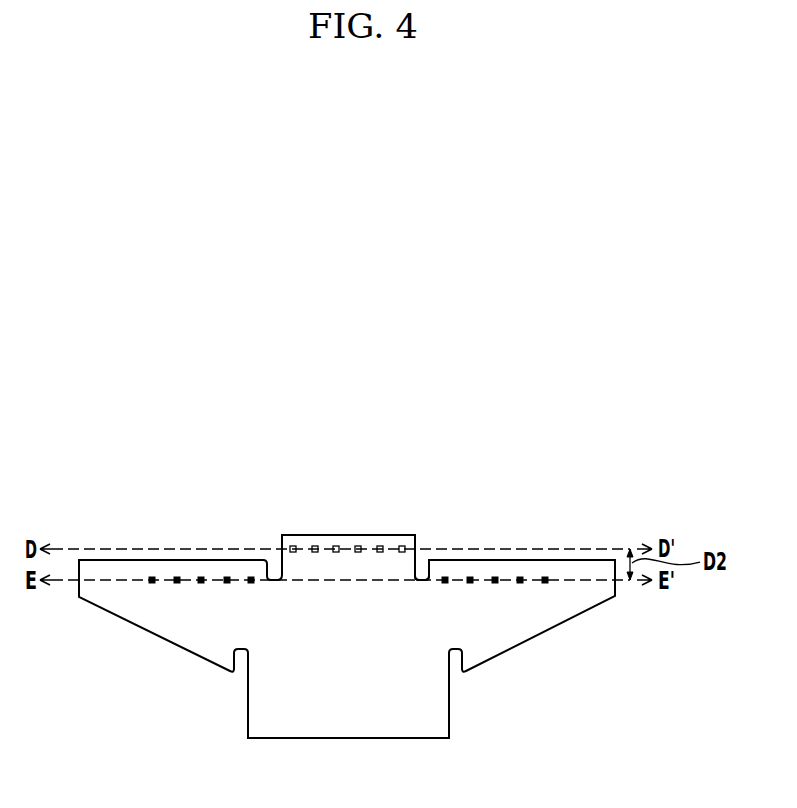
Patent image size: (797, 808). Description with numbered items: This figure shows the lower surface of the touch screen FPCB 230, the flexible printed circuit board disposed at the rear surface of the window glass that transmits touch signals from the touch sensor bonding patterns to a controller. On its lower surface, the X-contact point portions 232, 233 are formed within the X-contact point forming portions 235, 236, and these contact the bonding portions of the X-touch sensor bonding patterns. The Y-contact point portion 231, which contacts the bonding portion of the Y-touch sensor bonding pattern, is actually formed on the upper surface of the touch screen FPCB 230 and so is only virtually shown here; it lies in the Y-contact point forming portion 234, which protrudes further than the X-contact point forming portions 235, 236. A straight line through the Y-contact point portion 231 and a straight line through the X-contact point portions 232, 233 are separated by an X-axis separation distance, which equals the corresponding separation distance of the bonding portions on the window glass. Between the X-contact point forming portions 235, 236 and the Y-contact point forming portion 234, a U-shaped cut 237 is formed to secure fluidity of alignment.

The touch screen FPCB 230 is at (670, 476).
The Y-contact point portion 231 is at (292, 547).
The X-contact point portion 232 is at (152, 578).
The X-contact point portion 233 is at (545, 578).
The Y-contact point forming portion 234 is at (372, 535).
The X-contact point forming portion 235 is at (208, 560).
The X-contact point forming portion 236 is at (486, 560).
The U-shaped cut 237 is at (424, 563).